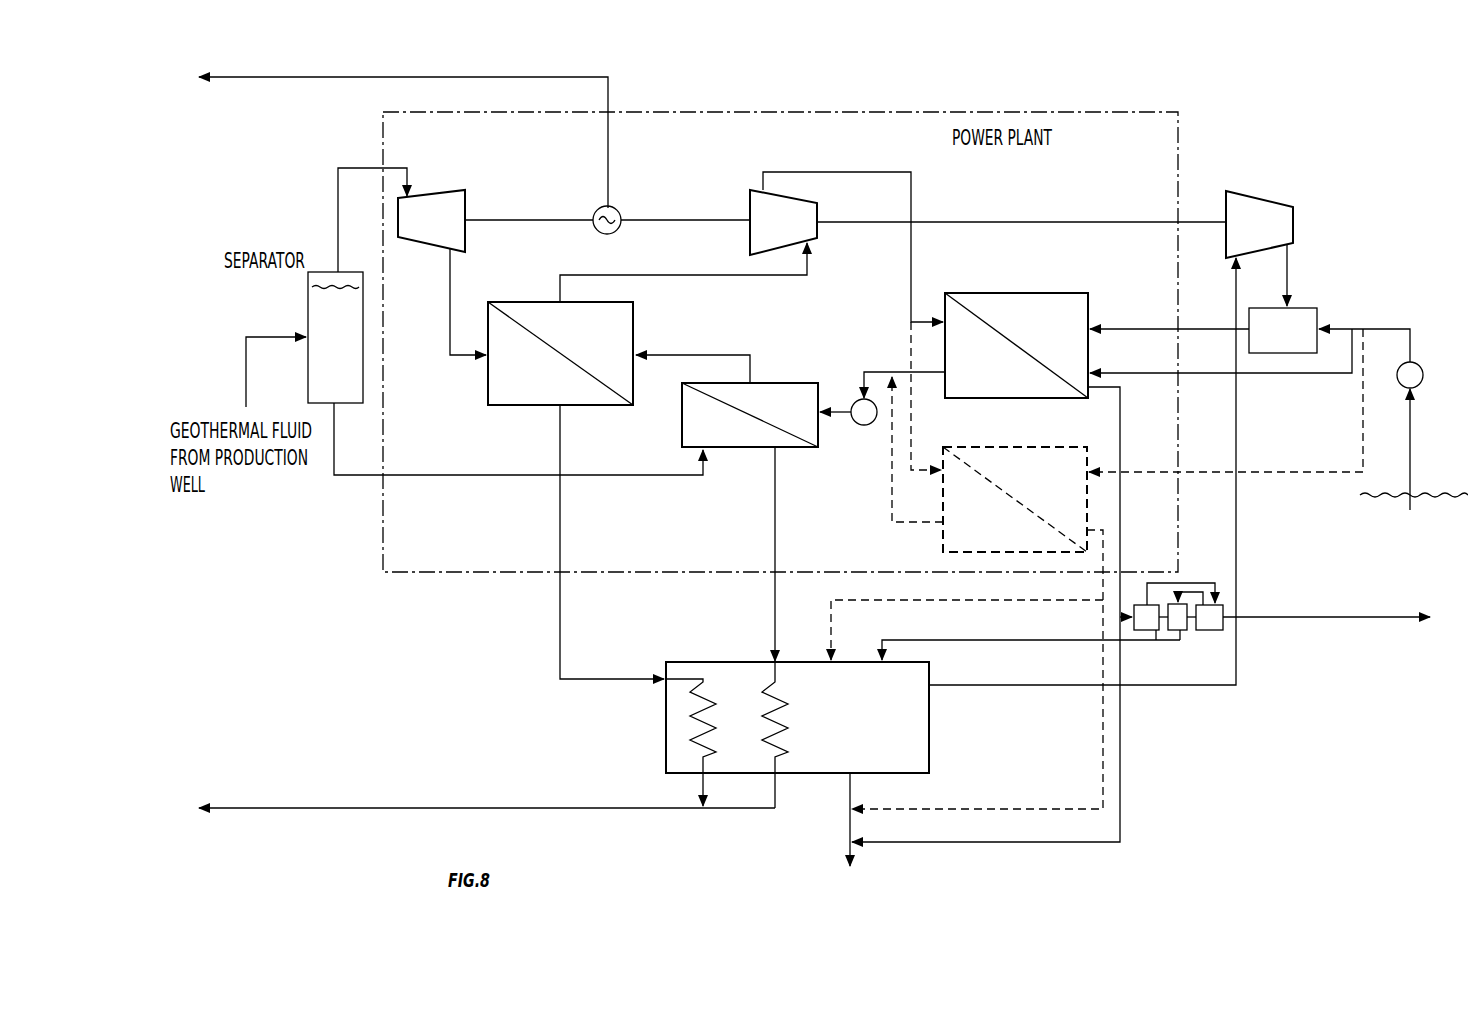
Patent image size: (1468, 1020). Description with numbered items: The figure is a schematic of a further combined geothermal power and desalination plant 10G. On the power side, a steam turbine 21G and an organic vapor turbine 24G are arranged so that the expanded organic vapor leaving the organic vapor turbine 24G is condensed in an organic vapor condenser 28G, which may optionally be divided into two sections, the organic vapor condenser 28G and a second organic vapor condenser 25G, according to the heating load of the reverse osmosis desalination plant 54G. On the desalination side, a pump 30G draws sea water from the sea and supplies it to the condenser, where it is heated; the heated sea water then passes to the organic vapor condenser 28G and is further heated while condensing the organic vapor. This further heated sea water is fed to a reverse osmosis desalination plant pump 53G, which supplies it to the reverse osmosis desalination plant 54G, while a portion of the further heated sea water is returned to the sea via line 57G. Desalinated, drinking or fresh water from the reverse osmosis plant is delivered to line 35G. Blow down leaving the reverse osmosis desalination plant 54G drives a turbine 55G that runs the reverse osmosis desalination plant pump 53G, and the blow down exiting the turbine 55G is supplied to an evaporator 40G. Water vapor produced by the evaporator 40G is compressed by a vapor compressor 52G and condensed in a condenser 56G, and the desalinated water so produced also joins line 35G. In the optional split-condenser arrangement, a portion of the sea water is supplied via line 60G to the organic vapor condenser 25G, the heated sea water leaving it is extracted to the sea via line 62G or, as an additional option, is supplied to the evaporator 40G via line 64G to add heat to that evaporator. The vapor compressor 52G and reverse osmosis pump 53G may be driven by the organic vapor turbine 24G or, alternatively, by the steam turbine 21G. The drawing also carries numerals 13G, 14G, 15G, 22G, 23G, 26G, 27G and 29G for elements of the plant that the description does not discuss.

The combined geothermal power and desalination plant 10G is at (196, 46).
The geothermal fluid supply line 13G is at (307, 273).
The steam line 14G is at (355, 167).
The brine line 15G is at (334, 476).
The steam turbine 21G is at (452, 186).
The condenser/vaporizer 22G is at (491, 301).
The brine line to evaporator 23G is at (553, 491).
The organic vapor turbine 24G is at (755, 189).
The organic vapor condenser section 25G is at (958, 448).
The generator 26G is at (612, 236).
The pre-heater 27G is at (766, 384).
The organic vapor condenser 28G is at (965, 294).
The pump 29G is at (858, 426).
The pump 30G is at (1398, 382).
The line of desalinated, drinking or fresh water 35G is at (1305, 617).
The evaporator 40G is at (682, 661).
The vapor compressor 52G is at (1290, 206).
The reverse osmosis desalination plant pump 53G is at (1160, 642).
The reverse osmosis desalination plant 54G is at (1225, 627).
The turbine 55G is at (1186, 632).
The condenser 56G is at (1305, 308).
The line 57G is at (1119, 830).
The line 60G is at (1285, 472).
The line 62G is at (1027, 809).
The line 64G is at (830, 601).